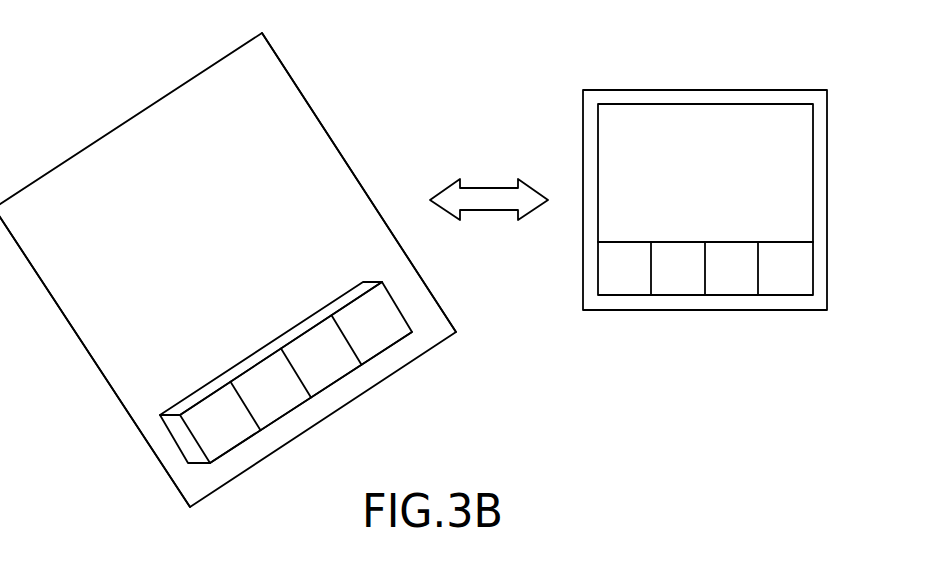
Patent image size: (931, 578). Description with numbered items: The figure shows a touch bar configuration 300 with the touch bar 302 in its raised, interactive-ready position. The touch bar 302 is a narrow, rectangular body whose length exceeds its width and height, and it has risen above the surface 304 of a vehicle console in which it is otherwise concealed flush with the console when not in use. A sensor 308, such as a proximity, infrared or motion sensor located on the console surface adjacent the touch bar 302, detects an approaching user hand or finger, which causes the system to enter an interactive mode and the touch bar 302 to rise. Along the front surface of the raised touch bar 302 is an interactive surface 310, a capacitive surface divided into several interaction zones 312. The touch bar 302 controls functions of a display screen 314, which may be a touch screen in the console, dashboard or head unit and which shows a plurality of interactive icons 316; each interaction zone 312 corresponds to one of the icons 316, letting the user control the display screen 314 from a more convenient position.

The touch bar configuration 300 is at (455, 62).
The touch bar 302 is at (412, 333).
The surface of a vehicle console 304 is at (330, 135).
The sensor 308 is at (193, 487).
The interactive surface 310 is at (340, 370).
The interaction zones 312 is at (302, 348).
The display screen 314 is at (713, 172).
The interactive icons 316 is at (735, 288).